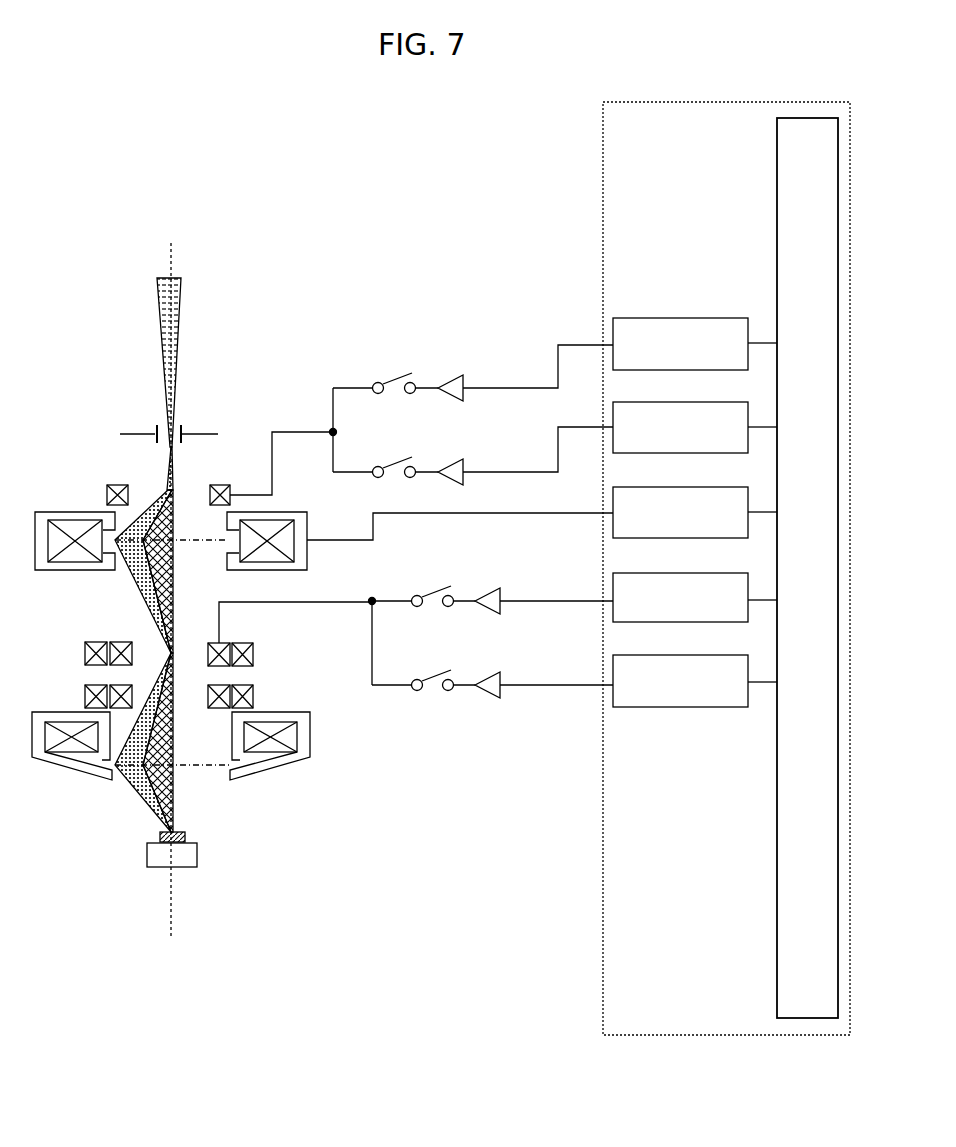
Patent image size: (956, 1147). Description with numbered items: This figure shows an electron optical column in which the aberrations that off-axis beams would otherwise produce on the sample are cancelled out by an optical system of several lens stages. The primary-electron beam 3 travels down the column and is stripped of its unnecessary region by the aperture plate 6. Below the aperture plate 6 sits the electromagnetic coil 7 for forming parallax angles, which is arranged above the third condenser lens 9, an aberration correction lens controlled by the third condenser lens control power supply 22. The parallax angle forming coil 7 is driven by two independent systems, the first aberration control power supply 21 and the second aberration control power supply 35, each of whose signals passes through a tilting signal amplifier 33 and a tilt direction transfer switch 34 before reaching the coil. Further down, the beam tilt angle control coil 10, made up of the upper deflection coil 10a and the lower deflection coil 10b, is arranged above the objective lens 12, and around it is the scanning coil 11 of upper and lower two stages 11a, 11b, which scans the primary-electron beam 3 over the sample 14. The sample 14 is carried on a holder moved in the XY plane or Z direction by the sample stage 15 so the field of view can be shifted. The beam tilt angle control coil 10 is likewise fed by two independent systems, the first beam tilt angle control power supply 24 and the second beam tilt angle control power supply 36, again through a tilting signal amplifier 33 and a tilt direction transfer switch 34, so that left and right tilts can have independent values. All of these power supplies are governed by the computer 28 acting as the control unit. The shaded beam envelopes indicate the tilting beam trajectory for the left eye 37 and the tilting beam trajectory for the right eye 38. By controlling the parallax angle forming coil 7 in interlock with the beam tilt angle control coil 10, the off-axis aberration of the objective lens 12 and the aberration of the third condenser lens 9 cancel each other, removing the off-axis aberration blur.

The primary-electron beam 3 is at (182, 308).
The aperture plate 6 is at (137, 432).
The electromagnetic coil for forming parallax angles 7 is at (107, 495).
The third condenser lens 9 is at (48, 541).
The beam tilt angle control coil 10 is at (85, 645).
The upper deflection coil 10a is at (123, 640).
The lower deflection coil 10b is at (123, 683).
The scanning coil 11 is at (272, 656).
The upper stage of scanning coil 11a is at (255, 652).
The lower stage of scanning coil 11b is at (255, 690).
The objective lens 12 is at (65, 720).
The sample 14 is at (185, 836).
The sample stage 15 is at (147, 856).
The first aberration control power supply 21 is at (700, 318).
The third condenser lens control power supply 22 is at (700, 487).
The primary-beam tilt angle control power supply 24 is at (700, 572).
The computer 28 is at (808, 118).
The tilting signal amplifier 33 is at (448, 376).
The tilt direction transfer switch 34 is at (392, 378).
The second aberration control power supply 35 is at (700, 402).
The second beam tilt angle control power supply 36 is at (700, 655).
The tilting beam trajectory for left eye 37 is at (137, 793).
The tilting beam trajectory for right eye 38 is at (168, 780).